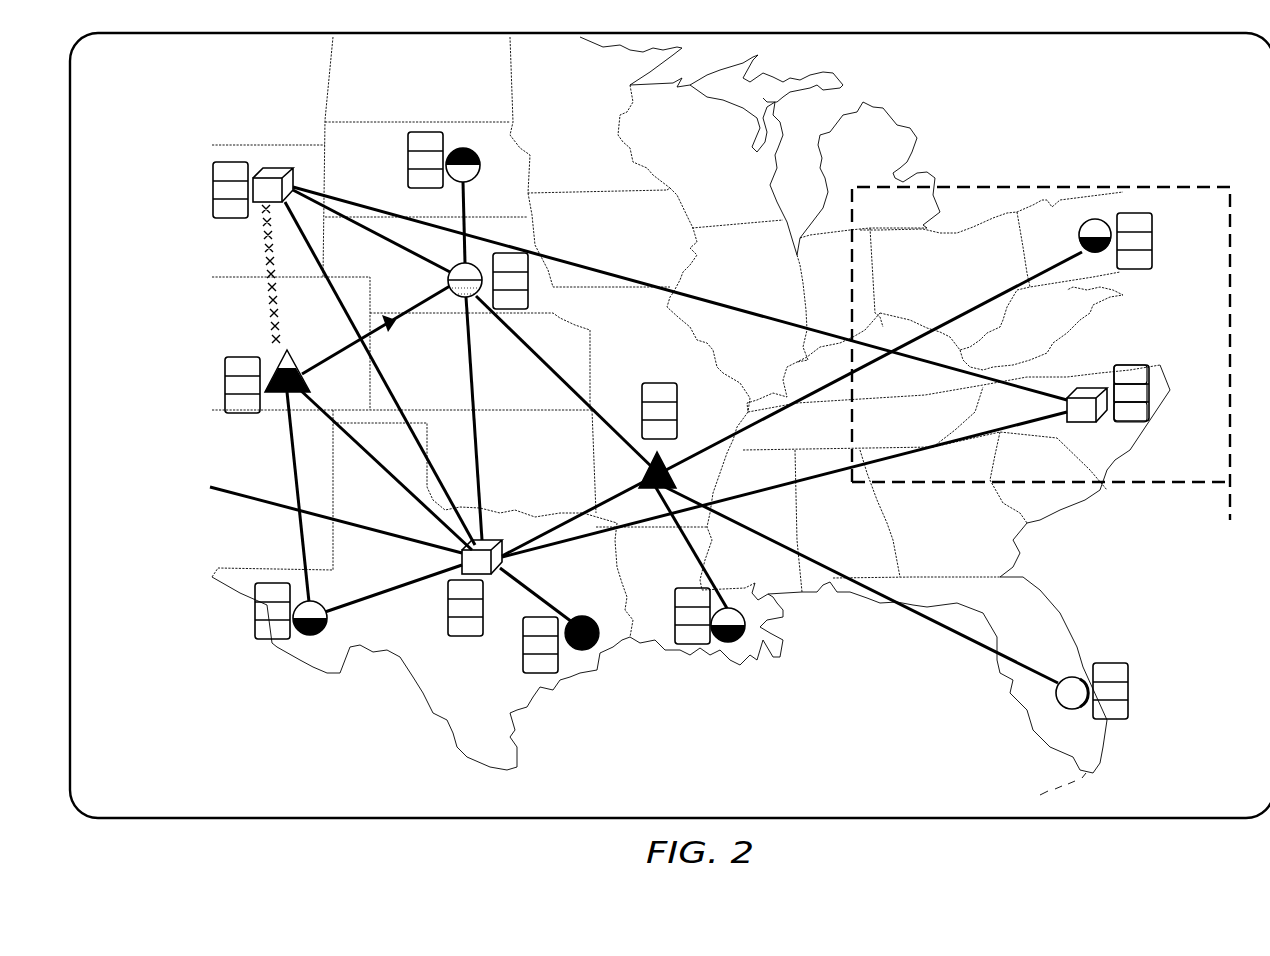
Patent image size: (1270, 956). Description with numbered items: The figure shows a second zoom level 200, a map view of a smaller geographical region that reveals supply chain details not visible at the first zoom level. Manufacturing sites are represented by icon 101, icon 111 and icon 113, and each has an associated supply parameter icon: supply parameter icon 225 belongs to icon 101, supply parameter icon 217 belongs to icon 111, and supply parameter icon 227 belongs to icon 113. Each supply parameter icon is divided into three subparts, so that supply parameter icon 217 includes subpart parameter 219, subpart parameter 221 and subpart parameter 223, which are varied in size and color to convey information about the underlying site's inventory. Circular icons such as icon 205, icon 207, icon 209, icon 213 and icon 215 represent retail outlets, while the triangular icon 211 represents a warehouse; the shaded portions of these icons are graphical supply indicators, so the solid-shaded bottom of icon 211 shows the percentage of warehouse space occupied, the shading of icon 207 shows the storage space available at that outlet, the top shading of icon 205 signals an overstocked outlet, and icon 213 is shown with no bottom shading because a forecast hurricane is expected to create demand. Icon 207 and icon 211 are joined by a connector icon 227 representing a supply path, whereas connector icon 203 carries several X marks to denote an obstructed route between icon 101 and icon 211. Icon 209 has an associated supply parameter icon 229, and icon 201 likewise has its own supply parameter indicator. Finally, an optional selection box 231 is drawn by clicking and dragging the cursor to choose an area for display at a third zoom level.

The second zoom level 200 is at (968, 111).
The icon 101 is at (283, 167).
The icon 111 is at (1091, 388).
The icon 113 is at (462, 558).
The icon 201 is at (640, 480).
The connector icon 203 is at (268, 300).
The icon 205 is at (462, 148).
The icon 207 is at (448, 279).
The icon 209 is at (580, 615).
The icon 211 is at (292, 352).
The icon 213 is at (1060, 678).
The icon 215 is at (1080, 236).
The supply parameter icon 217 is at (1136, 362).
The subpart parameter 219 is at (1148, 378).
The subpart parameter 221 is at (1148, 396).
The subpart parameter 223 is at (1148, 412).
The supply parameter icon 225 is at (213, 187).
The supply parameter icon 227 is at (400, 320).
The supply parameter icon 229 is at (523, 645).
The selection box 231 is at (1164, 182).